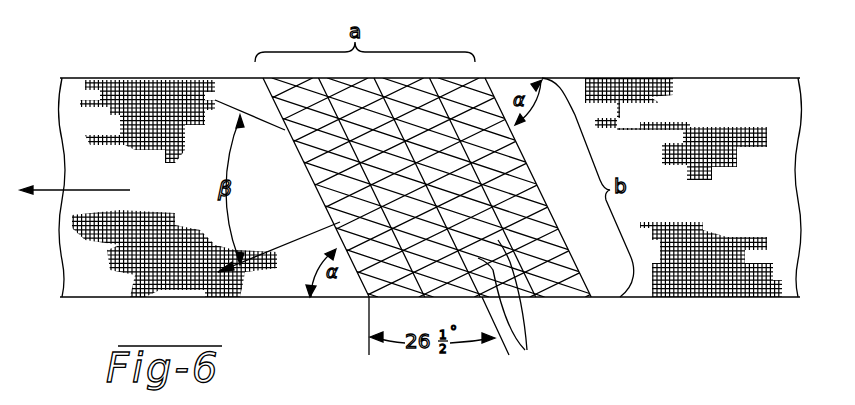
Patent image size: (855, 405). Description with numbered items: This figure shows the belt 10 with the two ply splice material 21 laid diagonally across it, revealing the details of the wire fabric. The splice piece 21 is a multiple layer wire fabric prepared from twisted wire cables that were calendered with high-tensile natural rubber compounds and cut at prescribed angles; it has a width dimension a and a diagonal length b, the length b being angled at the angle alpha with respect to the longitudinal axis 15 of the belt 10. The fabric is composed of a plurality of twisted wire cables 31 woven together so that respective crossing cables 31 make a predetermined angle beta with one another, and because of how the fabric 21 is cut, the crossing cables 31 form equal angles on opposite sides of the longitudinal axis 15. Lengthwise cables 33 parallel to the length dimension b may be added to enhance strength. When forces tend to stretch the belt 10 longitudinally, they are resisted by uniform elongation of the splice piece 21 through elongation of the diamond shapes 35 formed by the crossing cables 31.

The belt 10 is at (740, 77).
The longitudinal axis 15 is at (63, 185).
The splice material 21 is at (473, 75).
The twisted wire cables 31 is at (303, 140).
The lengthwise cables 33 is at (509, 310).
The diamond shapes 35 is at (378, 253).